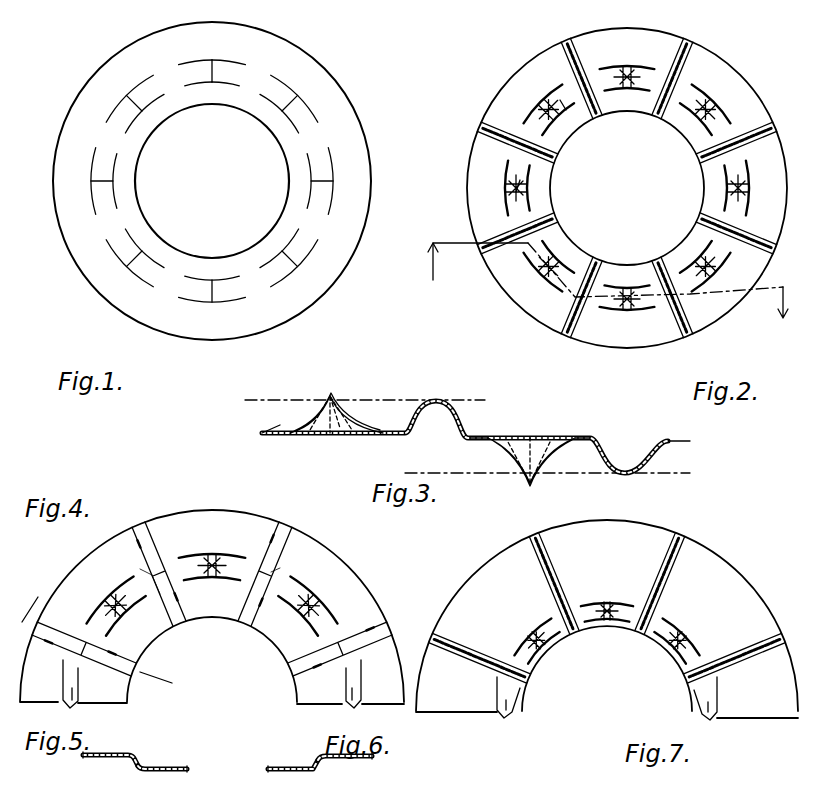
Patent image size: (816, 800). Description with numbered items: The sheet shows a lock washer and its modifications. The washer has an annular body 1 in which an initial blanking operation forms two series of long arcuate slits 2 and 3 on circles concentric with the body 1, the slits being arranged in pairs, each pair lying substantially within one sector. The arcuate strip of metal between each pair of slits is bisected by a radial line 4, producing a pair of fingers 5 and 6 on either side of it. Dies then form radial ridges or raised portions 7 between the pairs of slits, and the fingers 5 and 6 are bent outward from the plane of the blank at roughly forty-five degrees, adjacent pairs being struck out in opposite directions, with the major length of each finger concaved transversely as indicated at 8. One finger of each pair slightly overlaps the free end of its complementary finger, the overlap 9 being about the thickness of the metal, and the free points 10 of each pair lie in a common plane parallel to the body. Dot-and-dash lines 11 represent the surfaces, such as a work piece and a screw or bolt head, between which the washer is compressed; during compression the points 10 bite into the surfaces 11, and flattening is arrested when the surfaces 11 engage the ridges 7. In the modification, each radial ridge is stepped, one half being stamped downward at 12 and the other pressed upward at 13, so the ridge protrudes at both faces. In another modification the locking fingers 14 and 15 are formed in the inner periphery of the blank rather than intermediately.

In FIG. 1, the body 1 is at (368, 171).
In FIG. 2, the body 1 is at (470, 172).
In FIG. 1, the arcuate slit 2 is at (158, 98).
In FIG. 1, the arcuate slit 3 is at (130, 89).
In FIG. 2, the arcuate slit 3 is at (608, 292).
In FIG. 1, the radial line 4 is at (121, 98).
In FIG. 1, the finger 5 is at (114, 126).
In FIG. 2, the finger 5 is at (530, 117).
In FIG. 3, the finger 5 is at (560, 460).
In FIG. 4, the finger 5 is at (198, 645).
In FIG. 1, the finger 6 is at (150, 91).
In FIG. 2, the finger 6 is at (562, 100).
In FIG. 3, the finger 6 is at (515, 468).
In FIG. 4, the finger 6 is at (164, 687).
In FIG. 2, the radial ridge 7 is at (585, 59).
In FIG. 3, the radial ridge 7 is at (438, 400).
In FIG. 3, the concaved portion 8 is at (322, 400).
In FIG. 3, the overlap 9 is at (330, 396).
In FIG. 3, the free point 10 is at (329, 398).
In FIG. 3, the surface 11 is at (278, 398).
In FIG. 4, the downward-stamped half 12 is at (290, 546).
In FIG. 5, the downward-stamped half 12 is at (158, 774).
In FIG. 6, the downward-stamped half 12 is at (286, 775).
In FIG. 4, the upward-stamped half 13 is at (250, 628).
In FIG. 5, the upward-stamped half 13 is at (98, 770).
In FIG. 6, the upward-stamped half 13 is at (340, 770).
In FIG. 7, the locking finger 14 is at (597, 628).
In FIG. 7, the locking finger 15 is at (627, 628).